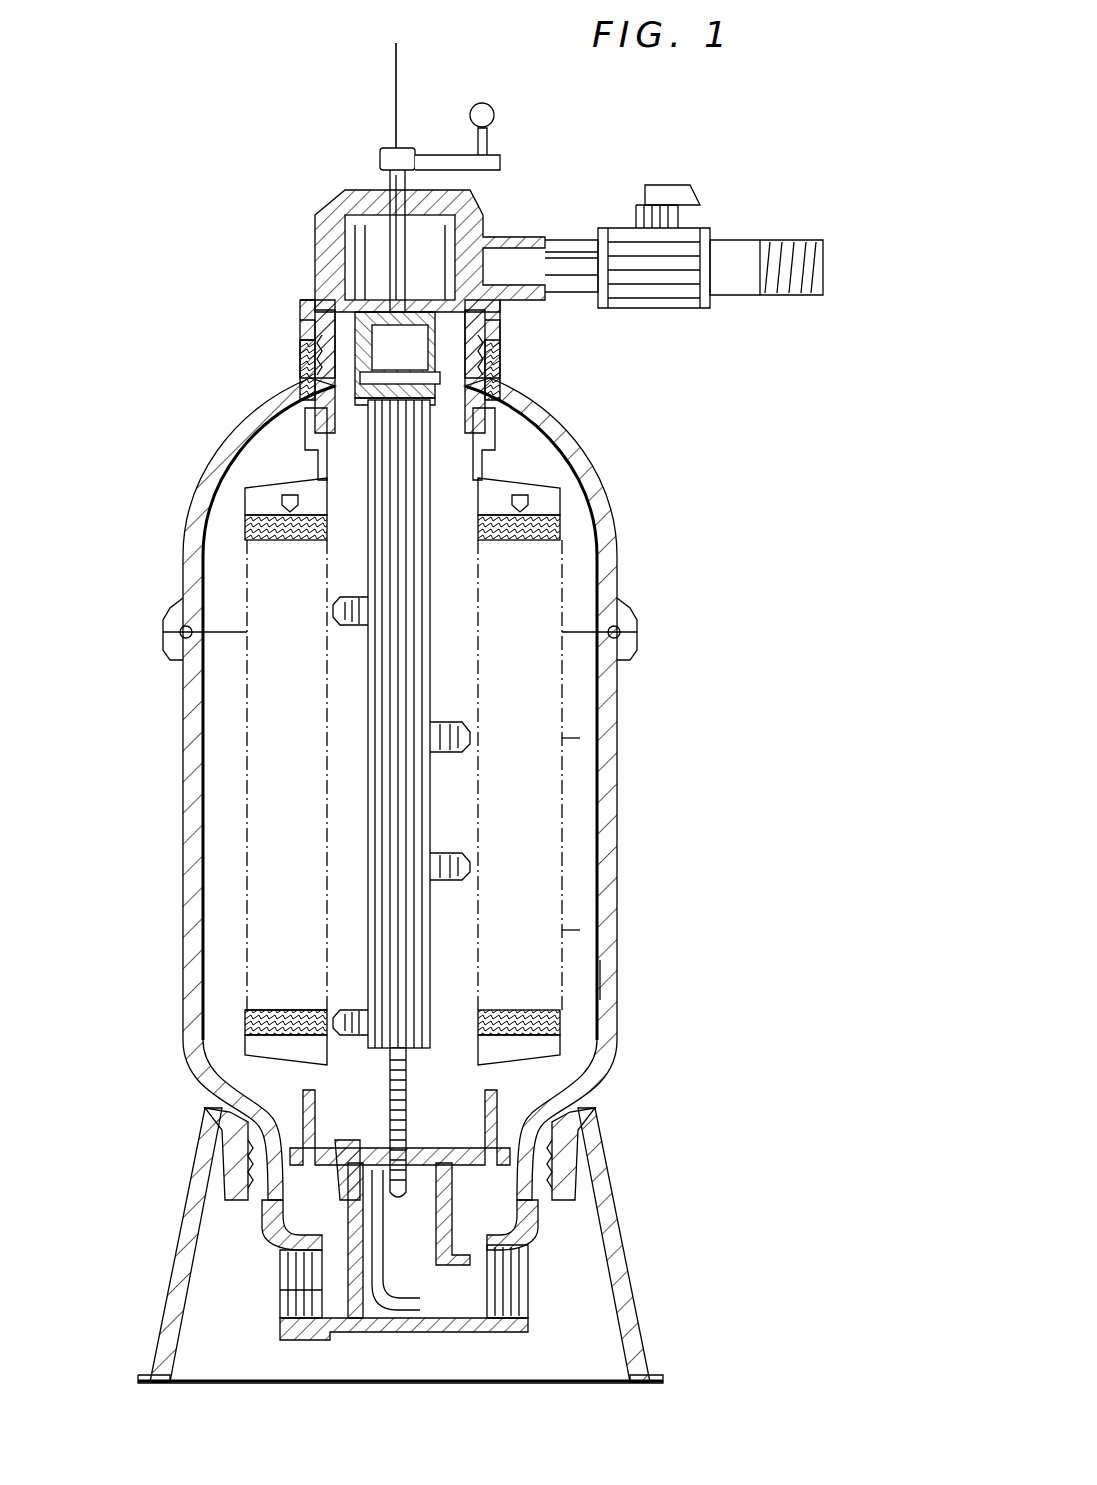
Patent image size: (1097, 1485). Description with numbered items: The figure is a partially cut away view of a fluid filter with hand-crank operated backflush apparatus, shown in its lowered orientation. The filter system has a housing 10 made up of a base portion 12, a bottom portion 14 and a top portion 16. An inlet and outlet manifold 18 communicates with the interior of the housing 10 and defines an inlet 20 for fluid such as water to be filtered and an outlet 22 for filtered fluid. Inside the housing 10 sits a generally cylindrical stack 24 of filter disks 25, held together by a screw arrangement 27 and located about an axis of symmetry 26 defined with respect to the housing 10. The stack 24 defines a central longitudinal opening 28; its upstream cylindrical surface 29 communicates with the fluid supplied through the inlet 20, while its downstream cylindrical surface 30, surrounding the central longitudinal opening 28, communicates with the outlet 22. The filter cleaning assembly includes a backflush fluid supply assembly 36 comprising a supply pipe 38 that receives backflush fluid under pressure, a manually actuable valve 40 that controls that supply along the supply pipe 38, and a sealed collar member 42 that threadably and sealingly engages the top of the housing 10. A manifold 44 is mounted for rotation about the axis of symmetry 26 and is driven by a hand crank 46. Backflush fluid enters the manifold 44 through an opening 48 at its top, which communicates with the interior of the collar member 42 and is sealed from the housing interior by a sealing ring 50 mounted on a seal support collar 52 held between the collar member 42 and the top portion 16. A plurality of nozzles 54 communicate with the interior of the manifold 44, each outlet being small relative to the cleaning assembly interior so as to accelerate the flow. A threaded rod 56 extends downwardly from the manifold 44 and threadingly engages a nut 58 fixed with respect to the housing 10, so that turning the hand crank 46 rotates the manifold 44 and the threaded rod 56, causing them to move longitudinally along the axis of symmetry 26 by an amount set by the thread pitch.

The housing 10 is at (670, 780).
The base portion 12 is at (620, 1215).
The bottom portion 14 is at (617, 975).
The top portion 16 is at (617, 548).
The inlet and outlet manifold 18 is at (300, 1293).
The inlet 20 is at (280, 1305).
The outlet 22 is at (515, 1300).
The stack 24 is at (562, 738).
The filter disks 25 is at (245, 1018).
The axis of symmetry 26 is at (400, 1260).
The screw arrangement 27 is at (528, 500).
The central longitudinal opening 28 is at (455, 1035).
The upstream cylindrical surface 29 is at (562, 932).
The downstream cylindrical surface 30 is at (330, 870).
The backflush fluid supply assembly 36 is at (687, 229).
The supply pipe 38 is at (760, 255).
The manually actuable valve 40 is at (678, 222).
The sealed collar member 42 is at (483, 205).
The manifold 44 is at (450, 470).
The hand crank 46 is at (458, 155).
The opening 48 is at (318, 350).
The sealing ring 50 is at (355, 405).
The seal support collar 52 is at (482, 350).
The nozzles 54 is at (333, 608).
The threaded rod 56 is at (303, 1085).
The nut 58 is at (406, 1085).